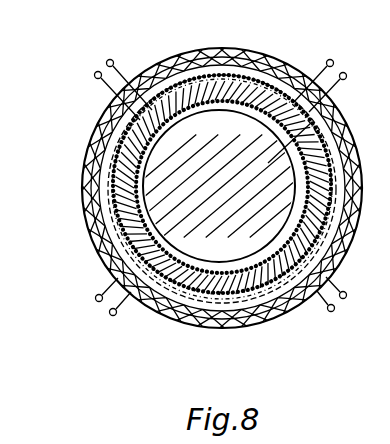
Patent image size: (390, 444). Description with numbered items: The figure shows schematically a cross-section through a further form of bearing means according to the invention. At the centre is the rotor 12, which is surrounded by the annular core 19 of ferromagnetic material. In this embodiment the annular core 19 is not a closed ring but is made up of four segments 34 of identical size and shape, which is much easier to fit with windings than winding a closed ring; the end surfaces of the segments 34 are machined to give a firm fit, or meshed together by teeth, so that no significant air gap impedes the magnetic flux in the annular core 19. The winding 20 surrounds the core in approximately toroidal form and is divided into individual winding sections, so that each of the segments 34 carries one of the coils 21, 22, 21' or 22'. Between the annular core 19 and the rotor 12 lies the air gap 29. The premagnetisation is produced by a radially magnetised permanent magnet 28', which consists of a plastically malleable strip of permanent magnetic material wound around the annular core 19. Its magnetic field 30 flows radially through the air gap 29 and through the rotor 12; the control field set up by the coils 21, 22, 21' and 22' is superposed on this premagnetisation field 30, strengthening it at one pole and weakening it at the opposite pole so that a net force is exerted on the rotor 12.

The rotor 12 is at (336, 108).
The annular core 19 is at (102, 153).
The winding 20 is at (236, 188).
The coil 21 is at (177, 187).
The coil 21' is at (222, 152).
The coil 22 is at (244, 188).
The coil 22' is at (222, 207).
The radially magnetised permanent magnet 28' is at (314, 69).
The air gap 29 is at (283, 312).
The magnetic field 30 is at (389, 273).
The segment 34 is at (209, 60).